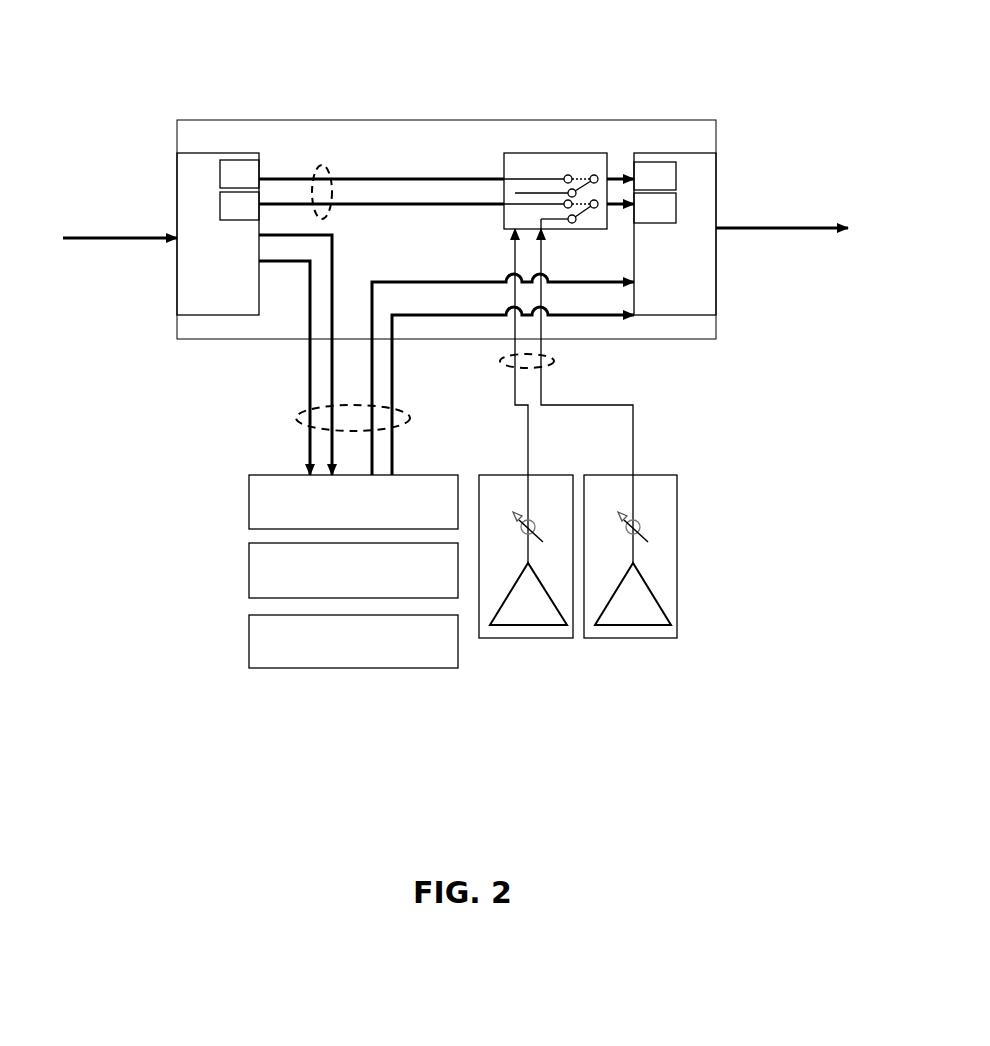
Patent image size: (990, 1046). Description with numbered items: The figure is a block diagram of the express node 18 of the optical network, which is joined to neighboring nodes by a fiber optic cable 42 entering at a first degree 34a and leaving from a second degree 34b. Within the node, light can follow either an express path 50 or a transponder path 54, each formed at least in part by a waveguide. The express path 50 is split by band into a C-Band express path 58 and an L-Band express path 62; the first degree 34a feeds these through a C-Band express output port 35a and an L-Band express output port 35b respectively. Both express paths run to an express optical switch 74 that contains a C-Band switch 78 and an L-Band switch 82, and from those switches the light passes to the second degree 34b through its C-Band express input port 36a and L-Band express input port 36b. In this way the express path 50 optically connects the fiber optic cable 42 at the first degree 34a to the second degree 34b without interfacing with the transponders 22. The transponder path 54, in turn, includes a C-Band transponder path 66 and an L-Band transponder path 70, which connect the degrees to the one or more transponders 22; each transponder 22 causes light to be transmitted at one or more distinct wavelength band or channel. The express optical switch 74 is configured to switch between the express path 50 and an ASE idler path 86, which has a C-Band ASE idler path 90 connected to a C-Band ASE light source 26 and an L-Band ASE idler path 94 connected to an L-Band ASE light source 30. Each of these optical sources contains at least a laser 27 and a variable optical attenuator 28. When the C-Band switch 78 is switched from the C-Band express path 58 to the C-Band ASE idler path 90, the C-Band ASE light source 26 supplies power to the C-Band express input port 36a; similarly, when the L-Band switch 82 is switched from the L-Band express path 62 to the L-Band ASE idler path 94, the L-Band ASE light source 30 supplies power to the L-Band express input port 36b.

The express node 18 is at (903, 48).
The fiber optic cable 42 is at (103, 235).
The first degree 34a is at (218, 234).
The C-Band express output port 35a is at (239, 175).
The L-Band express output port 35b is at (239, 207).
The second degree 34b is at (675, 234).
The C-Band express input port 36a is at (655, 176).
The L-Band express input port 36b is at (655, 208).
The C-Band express path 58 is at (435, 178).
The L-Band express path 62 is at (433, 205).
The express path 50 is at (322, 165).
The express optical switch 74 is at (505, 155).
The C-Band switch 78 is at (583, 172).
The L-Band switch 82 is at (586, 226).
The L-Band transponder path 70 is at (333, 288).
The C-Band transponder path 66 is at (493, 280).
The transponder path 54 is at (298, 418).
The transponder 22 is at (249, 502).
The C-Band ASE idler path 90 is at (527, 418).
The L-Band ASE idler path 94 is at (637, 430).
The ASE idler path 86 is at (555, 363).
The C-Band ASE light source 26 is at (528, 640).
The L-Band ASE light source 30 is at (633, 640).
The laser 27 is at (580, 594).
The variable optical attenuator 28 is at (523, 534).